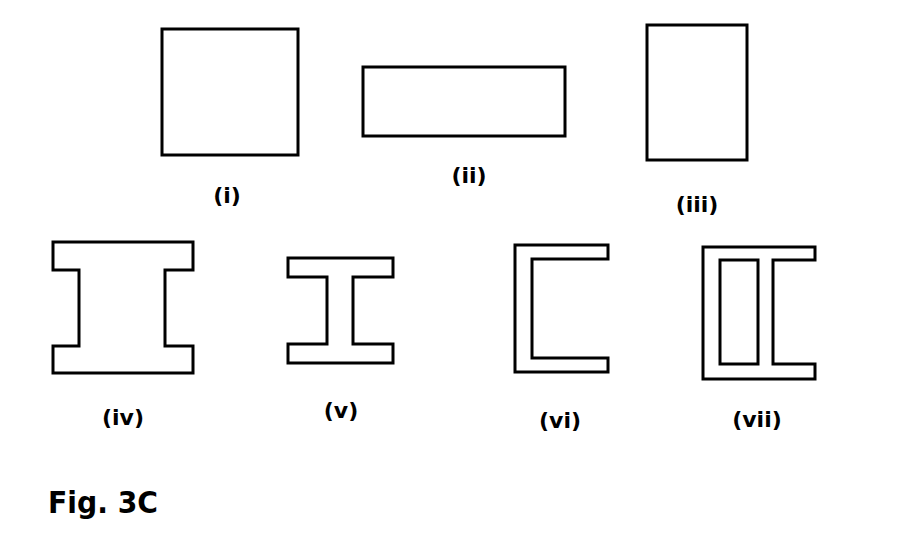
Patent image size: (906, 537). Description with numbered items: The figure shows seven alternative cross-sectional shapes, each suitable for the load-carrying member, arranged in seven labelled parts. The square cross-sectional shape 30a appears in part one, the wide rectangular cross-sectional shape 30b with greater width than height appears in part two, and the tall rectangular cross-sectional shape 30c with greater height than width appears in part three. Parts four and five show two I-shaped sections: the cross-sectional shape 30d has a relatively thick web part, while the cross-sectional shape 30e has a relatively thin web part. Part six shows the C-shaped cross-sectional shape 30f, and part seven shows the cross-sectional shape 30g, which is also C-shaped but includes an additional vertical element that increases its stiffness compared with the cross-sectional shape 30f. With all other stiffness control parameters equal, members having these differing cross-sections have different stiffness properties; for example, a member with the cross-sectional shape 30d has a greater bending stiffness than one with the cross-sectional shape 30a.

The square cross-sectional shape 30a is at (206, 103).
The wide rectangular cross-sectional shape 30b is at (448, 110).
The tall rectangular cross-sectional shape 30c is at (718, 105).
The thick-web I-shaped cross-sectional shape 30d is at (102, 318).
The thin-web I-shaped cross-sectional shape 30e is at (340, 313).
The C-shaped cross-sectional shape 30f is at (526, 318).
The C-shaped cross-sectional shape with additional vertical element 30g is at (763, 316).